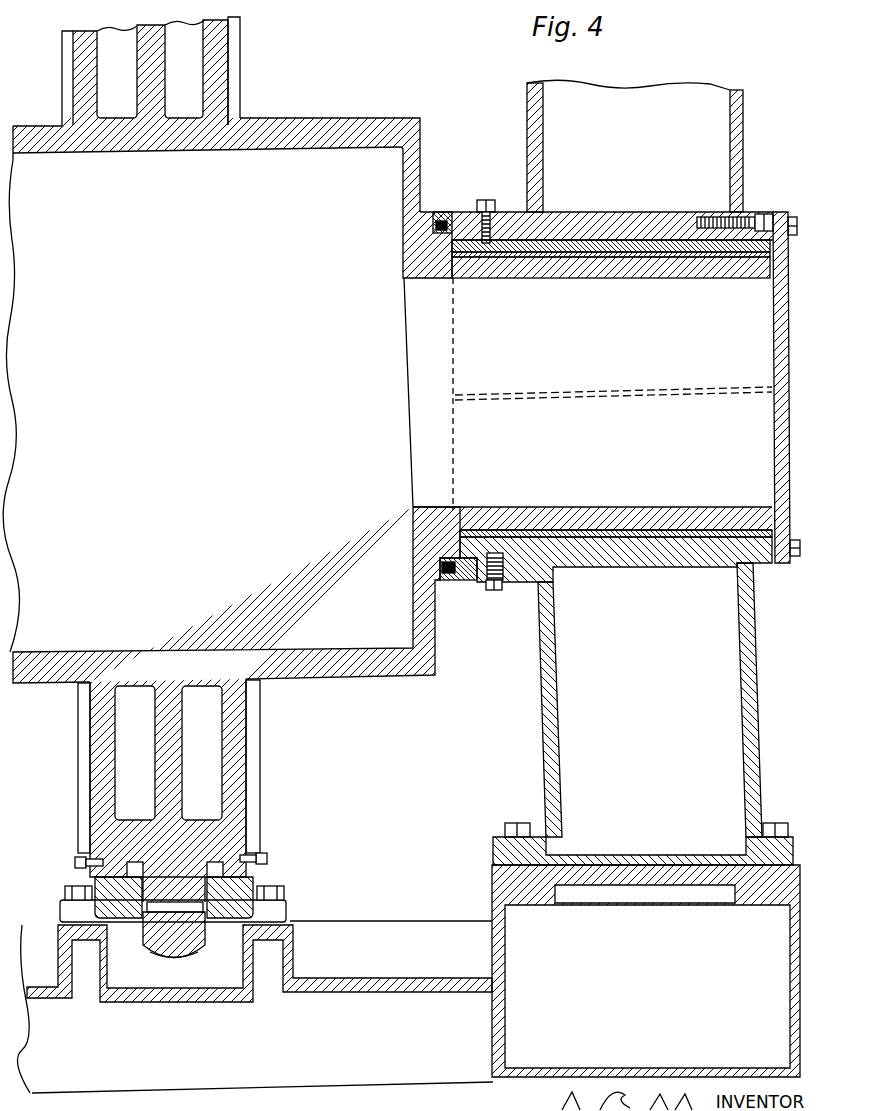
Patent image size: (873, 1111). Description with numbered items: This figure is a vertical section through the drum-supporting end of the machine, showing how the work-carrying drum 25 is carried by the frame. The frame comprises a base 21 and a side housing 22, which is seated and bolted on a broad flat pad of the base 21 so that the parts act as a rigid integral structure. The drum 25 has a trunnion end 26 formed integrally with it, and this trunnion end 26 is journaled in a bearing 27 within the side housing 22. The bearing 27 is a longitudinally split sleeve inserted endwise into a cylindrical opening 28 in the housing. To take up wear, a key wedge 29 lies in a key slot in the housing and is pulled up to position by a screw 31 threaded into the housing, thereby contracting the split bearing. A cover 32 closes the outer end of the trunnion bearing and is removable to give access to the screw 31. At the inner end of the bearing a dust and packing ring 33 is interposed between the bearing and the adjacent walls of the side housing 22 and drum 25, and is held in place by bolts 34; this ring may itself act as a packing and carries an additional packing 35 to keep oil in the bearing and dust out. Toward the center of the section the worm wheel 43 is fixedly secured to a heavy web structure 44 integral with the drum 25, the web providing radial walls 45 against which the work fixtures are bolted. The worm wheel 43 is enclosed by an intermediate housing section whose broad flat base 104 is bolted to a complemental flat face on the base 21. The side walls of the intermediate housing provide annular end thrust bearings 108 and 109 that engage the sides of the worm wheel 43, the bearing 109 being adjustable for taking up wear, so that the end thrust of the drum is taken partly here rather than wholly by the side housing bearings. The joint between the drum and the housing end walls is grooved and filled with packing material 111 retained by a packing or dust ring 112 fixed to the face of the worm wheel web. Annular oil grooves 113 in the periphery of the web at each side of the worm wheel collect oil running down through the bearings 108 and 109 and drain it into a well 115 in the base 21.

The base 21 is at (400, 1080).
The side housing 22 is at (738, 713).
The work-carrying drum 25 is at (373, 675).
The trunnion end 26 is at (628, 278).
The bearing 27 is at (632, 537).
The cylindrical opening 28 is at (588, 537).
The key wedge 29 is at (615, 240).
The screw 31 is at (730, 212).
The cover 32 is at (780, 213).
The dust and packing ring 33 is at (472, 582).
The bolt 34 is at (496, 591).
The packing 35 is at (440, 577).
The worm wheel 43 is at (150, 938).
The web structure 44 is at (227, 833).
The radial wall 45 is at (248, 766).
The base of intermediate housing section 104 is at (273, 907).
The end thrust bearing 108 is at (85, 881).
The adjustable end thrust bearing 109 is at (267, 879).
The packing material 111 is at (85, 864).
The packing or dust ring 112 is at (82, 797).
The annular oil groove 113 is at (133, 862).
The well 115 is at (185, 985).